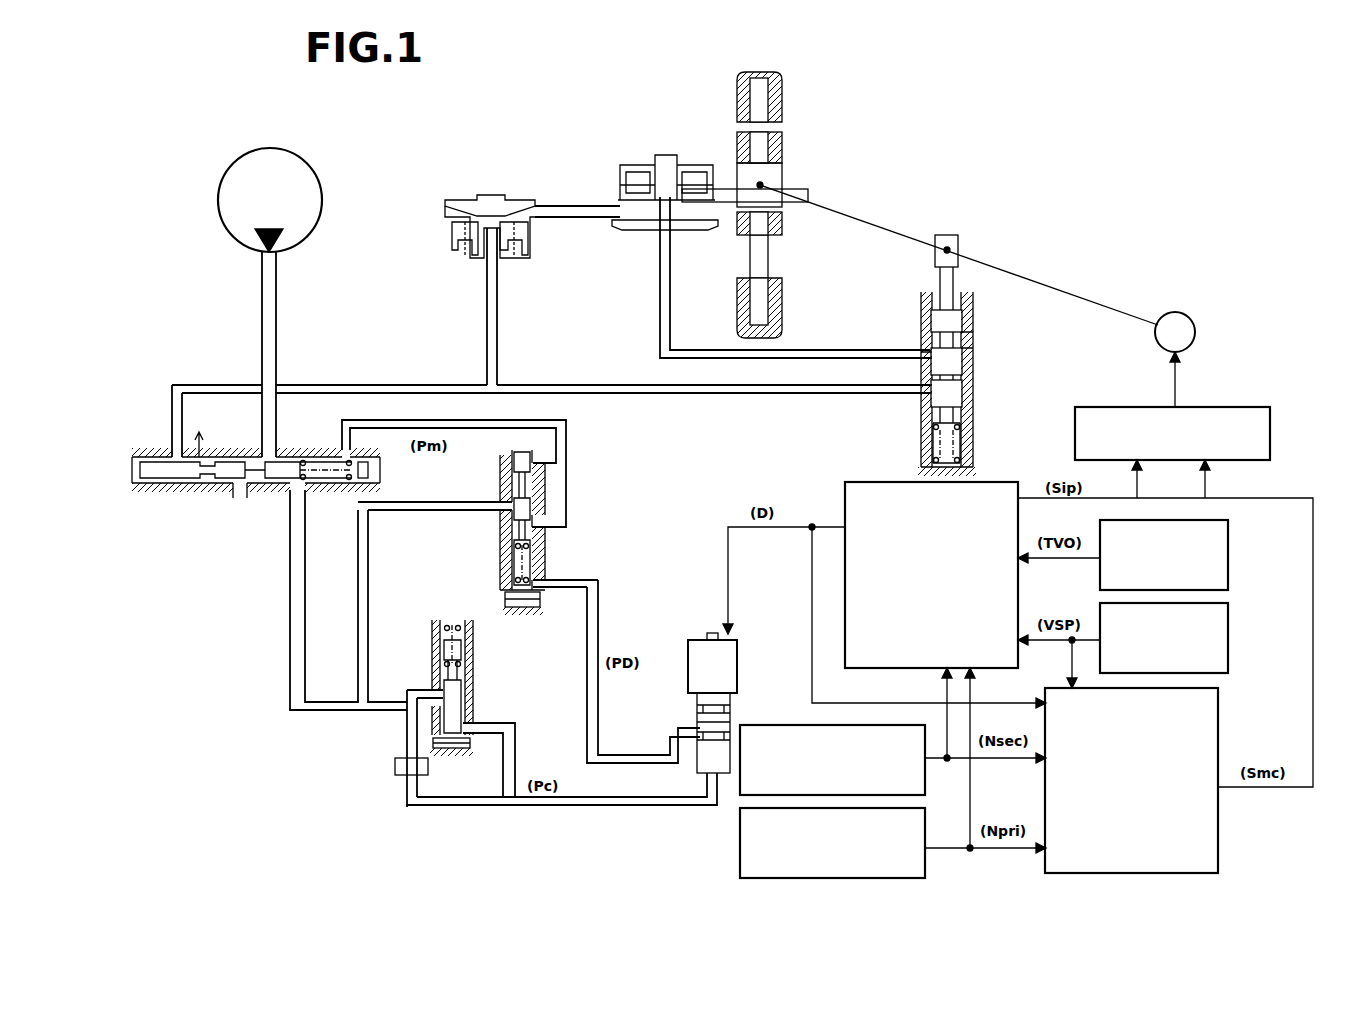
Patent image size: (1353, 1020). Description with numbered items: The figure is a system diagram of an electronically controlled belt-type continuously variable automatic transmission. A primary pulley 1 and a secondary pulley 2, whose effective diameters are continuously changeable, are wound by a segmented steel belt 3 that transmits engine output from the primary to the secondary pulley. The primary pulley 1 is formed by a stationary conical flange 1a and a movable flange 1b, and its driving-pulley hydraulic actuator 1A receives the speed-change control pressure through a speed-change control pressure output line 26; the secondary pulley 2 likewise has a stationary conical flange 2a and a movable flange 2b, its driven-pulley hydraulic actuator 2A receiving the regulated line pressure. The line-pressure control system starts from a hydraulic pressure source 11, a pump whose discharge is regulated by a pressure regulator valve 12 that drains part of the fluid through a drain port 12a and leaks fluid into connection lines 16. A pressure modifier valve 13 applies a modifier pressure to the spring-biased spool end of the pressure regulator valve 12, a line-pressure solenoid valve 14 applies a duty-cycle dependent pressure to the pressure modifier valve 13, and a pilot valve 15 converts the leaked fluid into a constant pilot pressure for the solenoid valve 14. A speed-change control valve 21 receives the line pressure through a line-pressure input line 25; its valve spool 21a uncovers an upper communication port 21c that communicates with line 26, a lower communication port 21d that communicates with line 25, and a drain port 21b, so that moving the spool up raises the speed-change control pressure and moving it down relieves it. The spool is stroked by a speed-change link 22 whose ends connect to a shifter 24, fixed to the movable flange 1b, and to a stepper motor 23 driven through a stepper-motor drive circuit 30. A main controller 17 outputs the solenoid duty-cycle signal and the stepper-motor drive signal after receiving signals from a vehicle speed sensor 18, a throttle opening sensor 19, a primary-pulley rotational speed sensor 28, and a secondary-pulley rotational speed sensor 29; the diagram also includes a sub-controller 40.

The primary pulley 1 is at (646, 147).
The driving-pulley hydraulic actuator 1A is at (633, 178).
The stationary conical flange 1a is at (680, 224).
The movable flange 1b is at (694, 190).
The secondary pulley 2 is at (497, 186).
The stationary conical flange 2a is at (470, 198).
The movable flange 2b is at (455, 224).
The driven-pulley hydraulic actuator 2A is at (523, 258).
The segmented steel belt 3 is at (568, 205).
The hydraulic pressure source 11 is at (313, 168).
The pressure regulator valve 12 is at (214, 506).
The drain port 12a is at (245, 500).
The pressure modifier valve 13 is at (555, 557).
The line-pressure solenoid valve 14 is at (688, 665).
The pilot valve 15 is at (484, 667).
The connection lines 16 is at (357, 690).
The main controller 17 is at (845, 498).
The vehicle speed sensor 18 is at (1230, 648).
The throttle opening sensor 19 is at (1230, 555).
The speed-change control valve 21 is at (982, 387).
The valve spool 21a is at (960, 244).
The drain port 21b is at (968, 333).
The upper communication port 21c is at (927, 352).
The lower communication port 21d is at (927, 396).
The speed-change link 22 is at (1062, 290).
The stepper motor 23 is at (1177, 310).
The shifter 24 is at (783, 170).
The line-pressure input line 25 is at (818, 396).
The speed-change control pressure output line 26 is at (845, 352).
The primary-pulley rotational speed sensor 28 is at (925, 862).
The secondary-pulley rotational speed sensor 29 is at (780, 725).
The stepper-motor drive circuit 30 is at (1270, 418).
The sub-controller 40 is at (1218, 720).